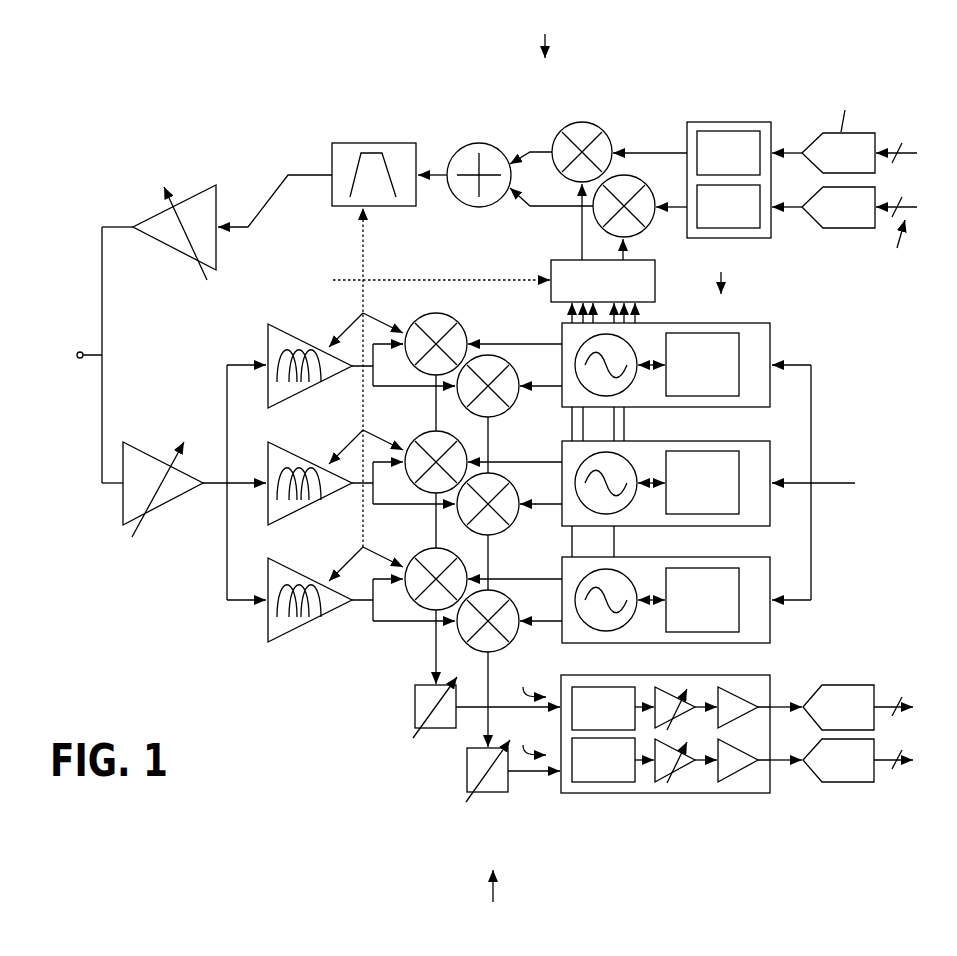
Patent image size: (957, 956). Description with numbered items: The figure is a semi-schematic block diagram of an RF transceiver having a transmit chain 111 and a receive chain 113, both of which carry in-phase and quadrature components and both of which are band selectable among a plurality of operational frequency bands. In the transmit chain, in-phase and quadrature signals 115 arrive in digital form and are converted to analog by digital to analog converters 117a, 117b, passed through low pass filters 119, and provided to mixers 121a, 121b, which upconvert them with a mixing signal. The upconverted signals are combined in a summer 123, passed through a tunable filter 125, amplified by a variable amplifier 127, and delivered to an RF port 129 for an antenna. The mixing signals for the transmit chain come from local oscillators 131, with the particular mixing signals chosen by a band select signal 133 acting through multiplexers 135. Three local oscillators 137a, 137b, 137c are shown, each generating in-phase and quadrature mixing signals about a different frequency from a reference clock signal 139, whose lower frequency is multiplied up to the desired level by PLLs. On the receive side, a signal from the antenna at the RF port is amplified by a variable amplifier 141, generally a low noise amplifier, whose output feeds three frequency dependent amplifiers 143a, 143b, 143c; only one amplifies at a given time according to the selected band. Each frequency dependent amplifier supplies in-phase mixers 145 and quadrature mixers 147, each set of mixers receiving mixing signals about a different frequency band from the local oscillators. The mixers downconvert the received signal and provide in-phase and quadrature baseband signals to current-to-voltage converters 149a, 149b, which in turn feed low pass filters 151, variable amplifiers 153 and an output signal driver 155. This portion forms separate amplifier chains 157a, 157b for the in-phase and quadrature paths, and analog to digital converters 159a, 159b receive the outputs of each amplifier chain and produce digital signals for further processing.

The transmit chain 111 is at (545, 33).
The receive chain 113 is at (495, 901).
The in-phase and quadrature signals 115 is at (887, 214).
The digital to analog converter 117a is at (827, 129).
The digital to analog converter 117b is at (833, 228).
The low pass filters 119 is at (707, 122).
The mixer 121a is at (600, 126).
The mixer 121b is at (647, 185).
The summer 123 is at (480, 144).
The tunable filter 125 is at (360, 143).
The variable amplifier 127 is at (197, 193).
The RF port 129 is at (82, 351).
The local oscillators 131 is at (721, 269).
The band select signal 133 is at (387, 280).
The multiplexers 135 is at (560, 259).
The local oscillator 137a is at (772, 340).
The local oscillator 137b is at (718, 441).
The local oscillator 137c is at (716, 557).
The reference clock signal 139 is at (824, 483).
The variable amplifier 141 is at (123, 507).
The frequency dependent amplifier 143a is at (267, 348).
The frequency dependent amplifier 143b is at (267, 465).
The frequency dependent amplifier 143c is at (268, 632).
The in-phase mixers 145 is at (429, 306).
The quadrature mixers 147 is at (504, 334).
The current-to-voltage converter 149a is at (415, 712).
The current-to-voltage converter 149b is at (467, 772).
The low pass filters 151 is at (583, 687).
The variable amplifiers 153 is at (667, 687).
The output signal driver 155 is at (736, 690).
The amplifier chain 157a is at (527, 680).
The amplifier chain 157b is at (527, 737).
The analog to digital converter 159a is at (845, 684).
The analog to digital converter 159b is at (830, 782).